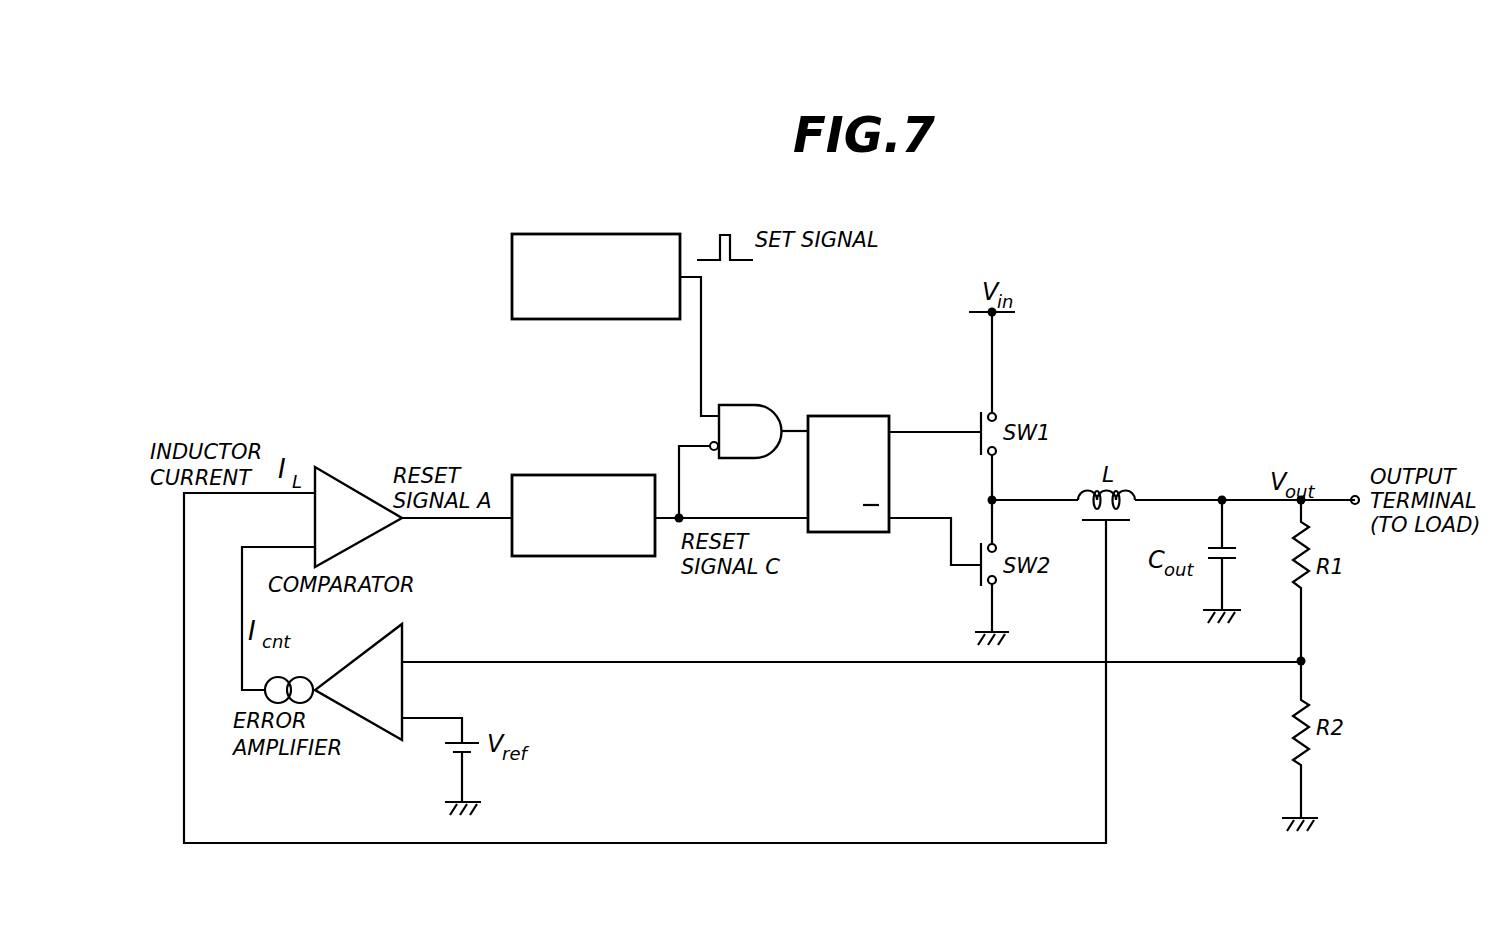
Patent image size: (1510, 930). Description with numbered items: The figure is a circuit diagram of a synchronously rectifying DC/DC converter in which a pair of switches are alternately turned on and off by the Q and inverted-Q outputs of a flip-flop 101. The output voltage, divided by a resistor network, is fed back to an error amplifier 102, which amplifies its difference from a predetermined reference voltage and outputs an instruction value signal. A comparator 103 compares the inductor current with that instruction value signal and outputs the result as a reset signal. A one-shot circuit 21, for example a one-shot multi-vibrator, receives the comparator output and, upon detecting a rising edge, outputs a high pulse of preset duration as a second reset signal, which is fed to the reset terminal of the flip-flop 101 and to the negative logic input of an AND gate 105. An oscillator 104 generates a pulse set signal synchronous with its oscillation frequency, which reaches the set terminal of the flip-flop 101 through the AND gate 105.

The oscillator 104 is at (512, 270).
The AND gate 105 is at (740, 405).
The flip-flop 101 is at (843, 416).
The comparator 103 is at (337, 478).
The one-shot circuit 21 is at (566, 475).
The error amplifier 102 is at (384, 731).